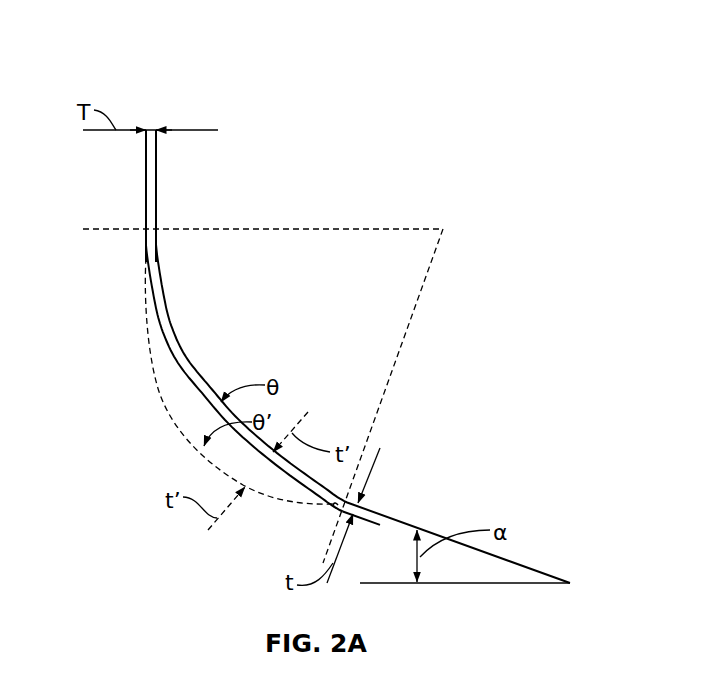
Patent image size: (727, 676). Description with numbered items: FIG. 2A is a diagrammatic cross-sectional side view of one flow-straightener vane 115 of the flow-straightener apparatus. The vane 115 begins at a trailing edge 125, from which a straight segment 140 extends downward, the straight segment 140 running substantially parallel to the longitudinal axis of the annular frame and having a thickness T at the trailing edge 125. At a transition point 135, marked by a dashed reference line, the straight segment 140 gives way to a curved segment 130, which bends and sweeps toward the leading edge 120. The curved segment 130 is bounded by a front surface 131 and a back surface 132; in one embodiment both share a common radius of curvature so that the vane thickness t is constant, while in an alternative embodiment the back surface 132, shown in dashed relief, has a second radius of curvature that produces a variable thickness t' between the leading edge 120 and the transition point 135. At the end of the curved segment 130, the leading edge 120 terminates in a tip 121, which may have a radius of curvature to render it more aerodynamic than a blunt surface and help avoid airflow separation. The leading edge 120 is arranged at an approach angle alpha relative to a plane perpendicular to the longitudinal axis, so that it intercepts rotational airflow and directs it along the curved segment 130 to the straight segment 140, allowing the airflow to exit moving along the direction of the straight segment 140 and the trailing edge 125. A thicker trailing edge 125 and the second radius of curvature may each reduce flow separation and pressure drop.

The flow-straightener vane 115 is at (461, 131).
The leading edge 120 is at (338, 505).
The tip 121 is at (240, 548).
The trailing edge 125 is at (151, 129).
The curved segment 130 is at (332, 414).
The front surface 131 is at (193, 357).
The back surface 132 is at (154, 375).
The transition point 135 is at (154, 228).
The straight segment 140 is at (147, 180).